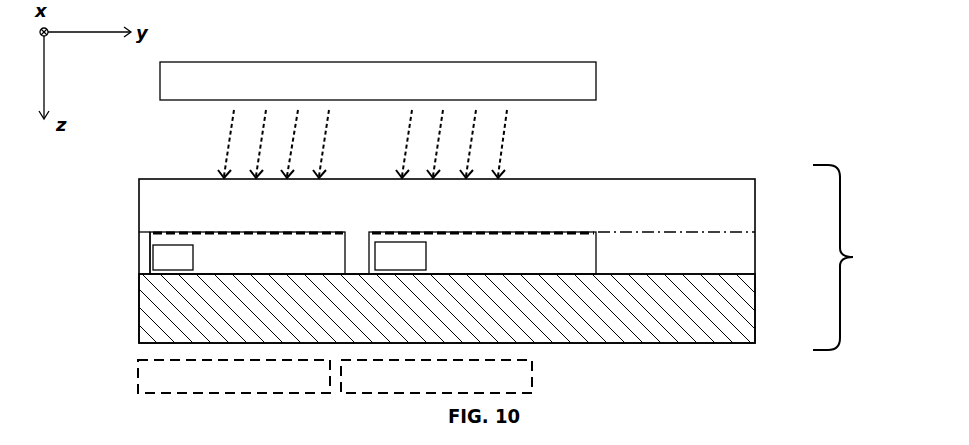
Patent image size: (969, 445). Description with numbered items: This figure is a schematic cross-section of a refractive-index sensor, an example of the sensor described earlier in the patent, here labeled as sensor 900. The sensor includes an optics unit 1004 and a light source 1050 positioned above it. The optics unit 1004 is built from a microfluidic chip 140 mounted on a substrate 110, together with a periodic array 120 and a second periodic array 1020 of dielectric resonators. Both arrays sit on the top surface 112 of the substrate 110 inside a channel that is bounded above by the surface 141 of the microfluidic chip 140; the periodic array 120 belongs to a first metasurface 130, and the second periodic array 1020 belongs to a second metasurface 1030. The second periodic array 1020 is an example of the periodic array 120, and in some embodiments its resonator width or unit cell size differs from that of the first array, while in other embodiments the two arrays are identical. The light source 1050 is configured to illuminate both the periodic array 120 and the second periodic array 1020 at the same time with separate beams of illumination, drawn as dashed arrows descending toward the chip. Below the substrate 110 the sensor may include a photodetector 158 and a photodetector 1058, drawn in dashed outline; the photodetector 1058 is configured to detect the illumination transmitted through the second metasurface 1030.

The microfluidic sensing system 900 is at (785, 68).
The light source 1050 is at (452, 91).
The microfluidic chip 140 is at (538, 212).
The surface 141 is at (351, 236).
The periodic array 120 is at (188, 267).
The metasurface 130 is at (342, 266).
The second periodic array 1020 is at (422, 267).
The metasurface 1030 is at (590, 266).
The top surface 112 is at (609, 262).
The substrate 110 is at (447, 308).
The photodetector 158 is at (313, 387).
The photodetector 1058 is at (520, 387).
The optics unit 1004 is at (857, 257).